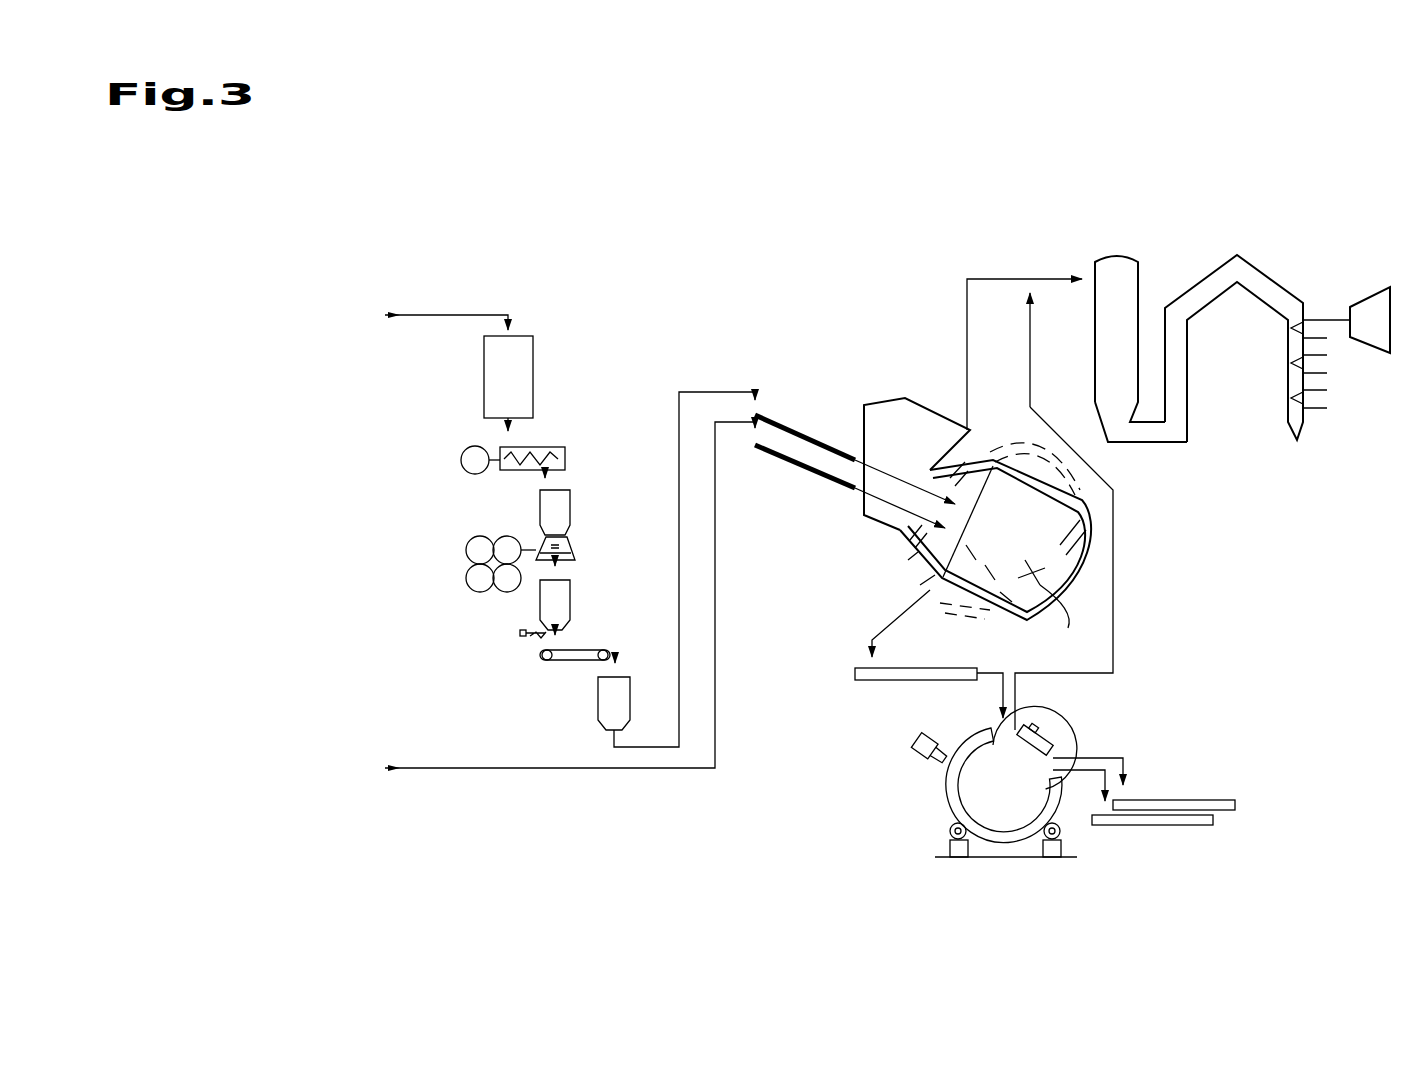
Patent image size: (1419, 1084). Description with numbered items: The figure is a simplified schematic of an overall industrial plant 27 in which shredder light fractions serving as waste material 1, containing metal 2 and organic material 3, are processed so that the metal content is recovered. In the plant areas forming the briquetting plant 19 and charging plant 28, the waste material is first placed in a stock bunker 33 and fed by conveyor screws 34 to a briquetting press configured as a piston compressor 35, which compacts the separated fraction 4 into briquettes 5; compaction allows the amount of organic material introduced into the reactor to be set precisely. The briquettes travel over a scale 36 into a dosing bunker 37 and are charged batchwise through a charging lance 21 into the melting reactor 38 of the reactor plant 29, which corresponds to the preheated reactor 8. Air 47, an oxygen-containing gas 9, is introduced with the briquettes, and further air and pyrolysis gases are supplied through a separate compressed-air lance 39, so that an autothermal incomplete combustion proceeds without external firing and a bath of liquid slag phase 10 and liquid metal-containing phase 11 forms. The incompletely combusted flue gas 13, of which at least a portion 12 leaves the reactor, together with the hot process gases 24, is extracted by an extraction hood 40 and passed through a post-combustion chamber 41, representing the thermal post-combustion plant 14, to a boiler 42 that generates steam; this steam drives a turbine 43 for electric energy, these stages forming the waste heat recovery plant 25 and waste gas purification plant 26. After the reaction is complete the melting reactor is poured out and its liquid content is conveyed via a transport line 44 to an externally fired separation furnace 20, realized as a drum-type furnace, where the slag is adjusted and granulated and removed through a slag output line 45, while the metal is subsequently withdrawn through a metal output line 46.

The waste material 1 is at (425, 315).
The metal 2 is at (505, 268).
The organic material 3 is at (505, 268).
The separated fraction 4 is at (505, 268).
The briquettes 5 is at (560, 562).
The reactor 8 is at (1063, 620).
The gas containing oxygen 9 is at (568, 677).
The liquid slag phase 10 is at (855, 630).
The liquid metal-containing phase 11 is at (467, 315).
The portion of incompletely combusted flue gas 12 is at (1122, 472).
The incompletely combusted flue gas 13 is at (1122, 472).
The thermal post-combustion plant 14 is at (1016, 434).
The briquetting plant 19 is at (390, 250).
The separation furnace 20 is at (1040, 738).
The charging lance 21 is at (767, 418).
The hot process gases 24 is at (983, 317).
The waste heat recovery plant 25 is at (1016, 434).
The waste gas purification plant 26 is at (1087, 243).
The industrial plant 27 is at (237, 237).
The charging plant 28 is at (375, 275).
The reactor plant 29 is at (805, 285).
The stock bunker 33 is at (497, 380).
The conveyor screws 34 is at (535, 450).
The piston compressor 35 is at (548, 517).
The scale 36 is at (553, 598).
The dosing bunker 37 is at (607, 697).
The melting reactor 38 is at (1032, 568).
The compressed-air lance 39 is at (793, 467).
The extraction hood 40 is at (908, 413).
The post-combustion chamber 41 is at (1118, 265).
The boiler 42 is at (1248, 275).
The turbine 43 is at (1372, 310).
The transport line 44 is at (897, 680).
The slag output line 45 is at (1175, 805).
The metal output line 46 is at (1162, 825).
The air 47 is at (436, 800).